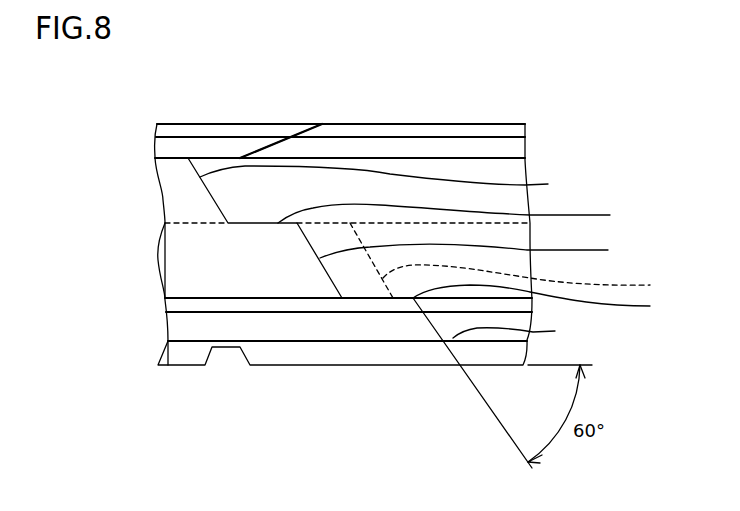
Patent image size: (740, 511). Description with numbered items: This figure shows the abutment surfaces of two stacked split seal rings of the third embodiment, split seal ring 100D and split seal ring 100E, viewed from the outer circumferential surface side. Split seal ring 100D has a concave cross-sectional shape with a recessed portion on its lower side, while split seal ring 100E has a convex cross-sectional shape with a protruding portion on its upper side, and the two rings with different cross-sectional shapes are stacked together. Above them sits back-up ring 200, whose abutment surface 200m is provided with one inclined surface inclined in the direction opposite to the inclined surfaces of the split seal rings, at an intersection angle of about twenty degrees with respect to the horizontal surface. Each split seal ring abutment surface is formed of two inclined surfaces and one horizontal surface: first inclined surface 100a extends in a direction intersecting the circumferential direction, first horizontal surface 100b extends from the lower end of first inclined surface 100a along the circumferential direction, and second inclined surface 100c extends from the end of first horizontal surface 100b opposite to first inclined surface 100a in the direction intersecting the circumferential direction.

The back-up ring 200 is at (202, 143).
The abutment surface of back-up ring 200m is at (278, 142).
The first inclined surface 100a is at (451, 231).
The first horizontal surface 100b is at (490, 261).
The second inclined surface 100c is at (488, 292).
The split seal ring 100D is at (180, 205).
The split seal ring 100E is at (180, 327).